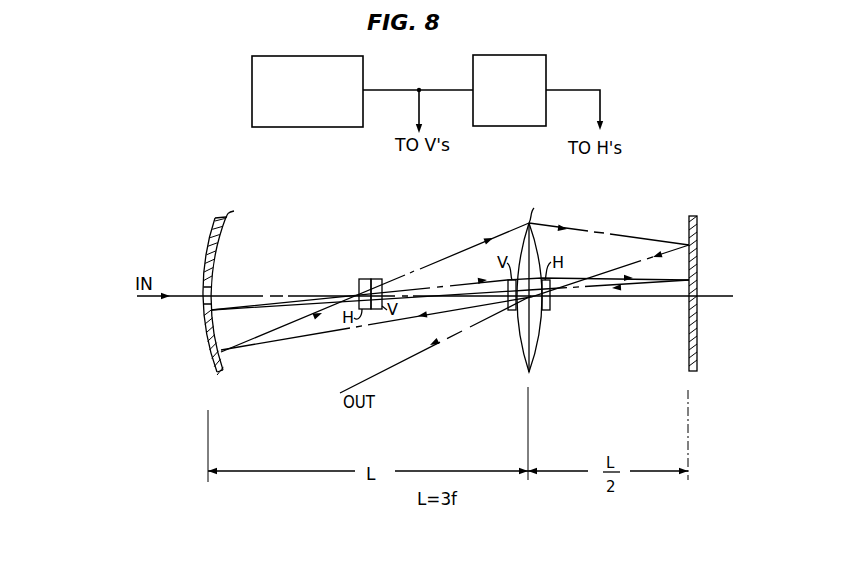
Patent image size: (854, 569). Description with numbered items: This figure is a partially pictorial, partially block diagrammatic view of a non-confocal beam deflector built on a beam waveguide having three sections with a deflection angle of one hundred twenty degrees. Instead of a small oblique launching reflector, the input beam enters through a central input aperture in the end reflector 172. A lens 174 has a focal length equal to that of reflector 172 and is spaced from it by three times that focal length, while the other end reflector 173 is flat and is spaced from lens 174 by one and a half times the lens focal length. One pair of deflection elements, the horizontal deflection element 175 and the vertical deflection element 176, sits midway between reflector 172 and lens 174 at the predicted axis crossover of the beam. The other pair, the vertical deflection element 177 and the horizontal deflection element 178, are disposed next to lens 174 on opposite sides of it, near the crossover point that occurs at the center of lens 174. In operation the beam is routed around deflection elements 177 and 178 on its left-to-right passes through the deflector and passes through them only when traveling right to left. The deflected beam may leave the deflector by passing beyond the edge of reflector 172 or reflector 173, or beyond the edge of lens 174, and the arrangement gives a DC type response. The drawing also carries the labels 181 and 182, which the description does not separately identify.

The reflector 172 is at (223, 370).
The end reflector 173 is at (697, 343).
The lens 174 is at (529, 372).
The horizontal deflection element 175 is at (362, 279).
The vertical deflection element 176 is at (377, 279).
The vertical deflection element 177 is at (511, 310).
The horizontal deflection element 178 is at (546, 310).
The synchronous modulator 181 is at (252, 80).
The 90 degree phase shifter 182 is at (546, 73).